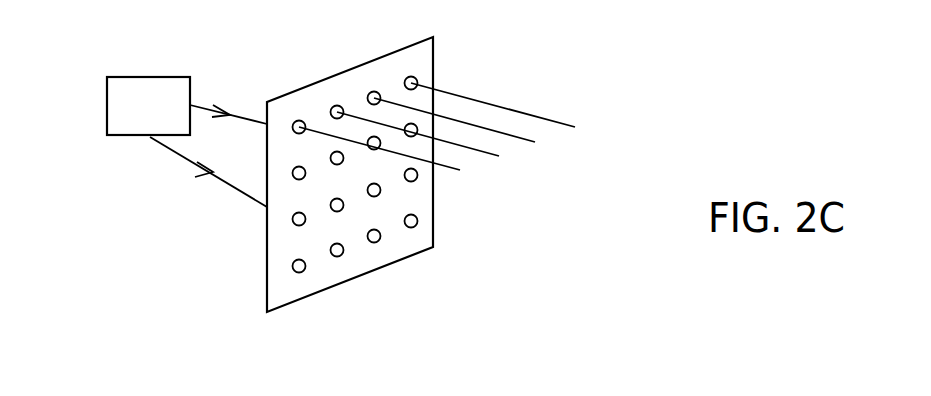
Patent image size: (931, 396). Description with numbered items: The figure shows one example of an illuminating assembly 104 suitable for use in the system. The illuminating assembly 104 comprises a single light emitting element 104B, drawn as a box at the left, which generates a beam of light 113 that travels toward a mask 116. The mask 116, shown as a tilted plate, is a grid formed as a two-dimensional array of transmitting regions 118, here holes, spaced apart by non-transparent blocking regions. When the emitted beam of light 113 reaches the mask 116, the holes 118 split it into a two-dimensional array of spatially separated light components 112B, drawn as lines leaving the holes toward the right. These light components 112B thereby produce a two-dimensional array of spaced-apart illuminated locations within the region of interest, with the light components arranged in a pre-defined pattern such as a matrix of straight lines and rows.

The illuminating assembly 104 is at (167, 273).
The light emitting element 104B is at (145, 77).
The beam of light 113 is at (231, 187).
The mask 116 is at (267, 273).
The transmitting regions 118 is at (410, 228).
The light components 112B is at (478, 125).